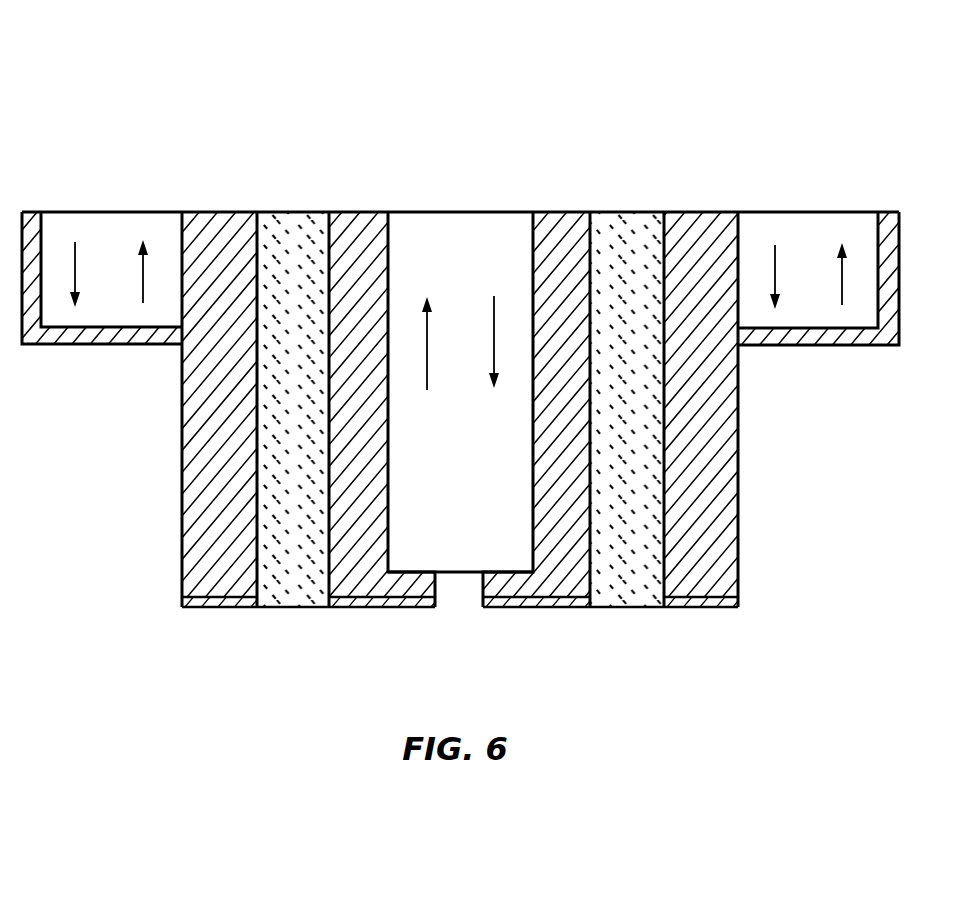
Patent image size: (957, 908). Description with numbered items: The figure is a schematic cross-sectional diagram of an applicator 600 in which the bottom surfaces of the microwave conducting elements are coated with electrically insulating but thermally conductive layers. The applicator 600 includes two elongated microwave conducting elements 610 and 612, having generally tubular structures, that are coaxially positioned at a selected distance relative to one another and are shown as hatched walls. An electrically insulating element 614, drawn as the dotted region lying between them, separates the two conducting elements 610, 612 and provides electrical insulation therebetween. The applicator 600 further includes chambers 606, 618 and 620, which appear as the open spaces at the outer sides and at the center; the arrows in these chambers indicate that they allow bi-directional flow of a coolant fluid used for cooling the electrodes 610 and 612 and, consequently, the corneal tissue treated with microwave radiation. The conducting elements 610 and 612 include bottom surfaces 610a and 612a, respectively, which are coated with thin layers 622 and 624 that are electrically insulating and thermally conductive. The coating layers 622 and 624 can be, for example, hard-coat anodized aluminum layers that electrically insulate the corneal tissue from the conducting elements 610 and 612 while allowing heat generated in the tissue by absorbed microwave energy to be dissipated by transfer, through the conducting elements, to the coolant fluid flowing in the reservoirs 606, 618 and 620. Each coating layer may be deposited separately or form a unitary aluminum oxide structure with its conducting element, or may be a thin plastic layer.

The applicator 600 is at (189, 82).
The chamber 606 is at (112, 216).
The microwave conducting element 610 is at (238, 213).
The bottom surface 610a is at (186, 598).
The microwave conducting element 612 is at (368, 213).
The bottom surface 612a is at (344, 596).
The electrically insulating element 614 is at (308, 213).
The chamber 618 is at (829, 214).
The chamber 620 is at (492, 228).
The coating layer 622 is at (205, 608).
The coating layer 624 is at (398, 608).